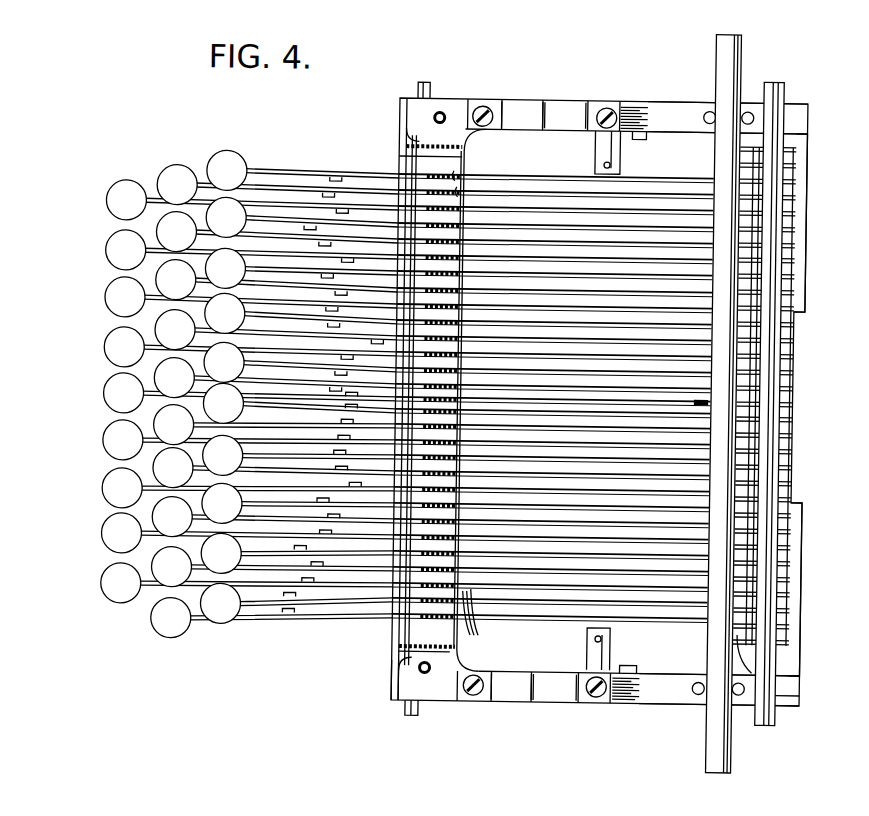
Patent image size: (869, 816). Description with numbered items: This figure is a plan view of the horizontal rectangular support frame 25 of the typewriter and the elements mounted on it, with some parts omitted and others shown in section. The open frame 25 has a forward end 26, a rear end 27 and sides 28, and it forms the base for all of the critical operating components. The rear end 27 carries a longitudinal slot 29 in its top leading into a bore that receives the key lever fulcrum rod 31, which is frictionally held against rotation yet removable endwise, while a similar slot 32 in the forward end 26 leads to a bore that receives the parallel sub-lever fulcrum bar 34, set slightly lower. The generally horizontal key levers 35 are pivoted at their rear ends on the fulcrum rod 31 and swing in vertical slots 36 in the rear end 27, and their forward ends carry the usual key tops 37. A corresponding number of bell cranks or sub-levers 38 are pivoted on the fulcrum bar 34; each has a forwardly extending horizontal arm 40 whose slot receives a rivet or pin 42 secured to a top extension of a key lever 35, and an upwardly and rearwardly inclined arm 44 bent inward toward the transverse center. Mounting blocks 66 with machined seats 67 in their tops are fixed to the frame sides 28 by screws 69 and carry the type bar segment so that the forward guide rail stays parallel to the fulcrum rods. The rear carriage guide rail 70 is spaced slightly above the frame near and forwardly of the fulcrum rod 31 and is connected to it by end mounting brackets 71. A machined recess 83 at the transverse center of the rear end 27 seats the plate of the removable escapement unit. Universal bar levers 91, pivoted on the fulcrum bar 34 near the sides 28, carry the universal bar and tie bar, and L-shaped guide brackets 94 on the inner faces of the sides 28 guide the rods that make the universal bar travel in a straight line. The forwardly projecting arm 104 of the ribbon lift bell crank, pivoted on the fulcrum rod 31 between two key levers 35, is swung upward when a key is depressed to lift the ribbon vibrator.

The horizontal rectangular support frame 25 is at (640, 99).
The forward end 26 is at (412, 630).
The rear end 27 is at (808, 265).
The sides 28 is at (678, 110).
The longitudinal slot 29 is at (786, 686).
The key lever fulcrum rod 31 is at (775, 672).
The slot 32 is at (425, 672).
The sub-lever fulcrum bar 34 is at (428, 706).
The key levers 35 is at (544, 208).
The vertical slots 36 is at (803, 236).
The key tops 37 is at (153, 424).
The bell cranks or sub-levers 38 is at (462, 194).
The forwardly extending horizontal arms 40 is at (338, 607).
The rivets or pins 42 is at (348, 212).
The upwardly and rearwardly inclined arms 44 is at (480, 622).
The mounting blocks 66 is at (560, 108).
The notches or seats 67 is at (522, 106).
The screws 69 is at (483, 105).
The rear carriage guide rail 70 is at (742, 750).
The end mounting brackets 71 is at (755, 100).
The machined recess 83 is at (800, 496).
The universal bar levers 91 is at (418, 138).
The L-shaped guide brackets 94 is at (613, 152).
The forwardly projecting arm 104 is at (705, 391).